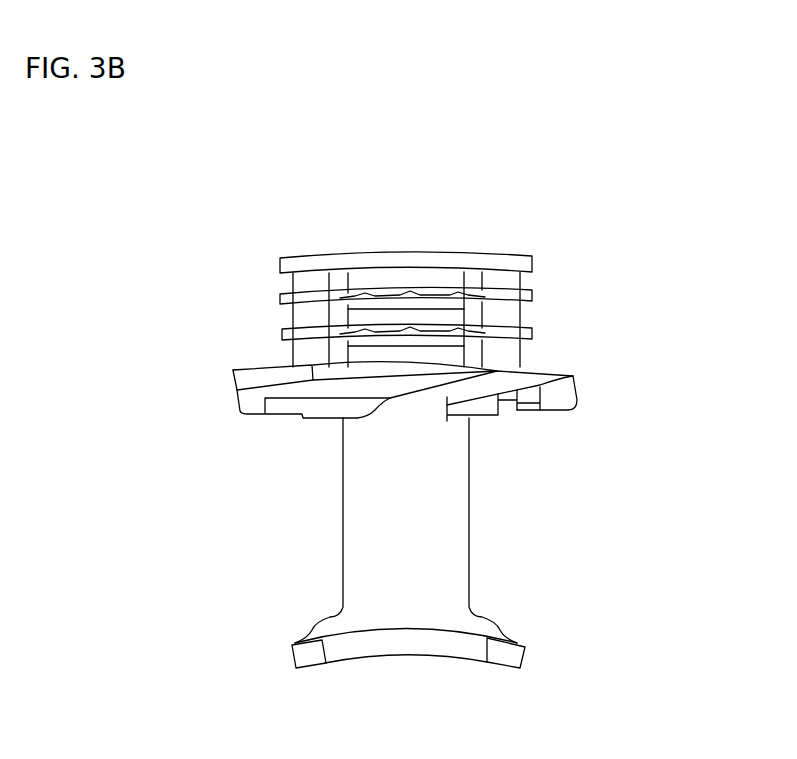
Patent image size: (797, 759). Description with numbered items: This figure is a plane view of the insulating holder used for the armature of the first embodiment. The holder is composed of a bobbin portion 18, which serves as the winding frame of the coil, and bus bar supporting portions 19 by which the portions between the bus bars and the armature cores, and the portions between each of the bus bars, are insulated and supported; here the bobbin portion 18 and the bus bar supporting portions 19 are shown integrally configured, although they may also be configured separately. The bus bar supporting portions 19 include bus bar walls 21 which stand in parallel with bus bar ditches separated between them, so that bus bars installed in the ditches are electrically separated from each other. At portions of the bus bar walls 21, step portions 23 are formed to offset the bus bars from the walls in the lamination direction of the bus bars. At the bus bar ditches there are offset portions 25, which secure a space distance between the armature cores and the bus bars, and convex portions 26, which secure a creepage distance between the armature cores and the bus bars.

The offset portion 25 is at (348, 268).
The convex portion 26 is at (313, 310).
The bus bar wall 21 is at (282, 333).
The bus bar supporting portion 19 is at (553, 263).
The step portion 23 is at (465, 307).
The bobbin portion 18 is at (420, 480).